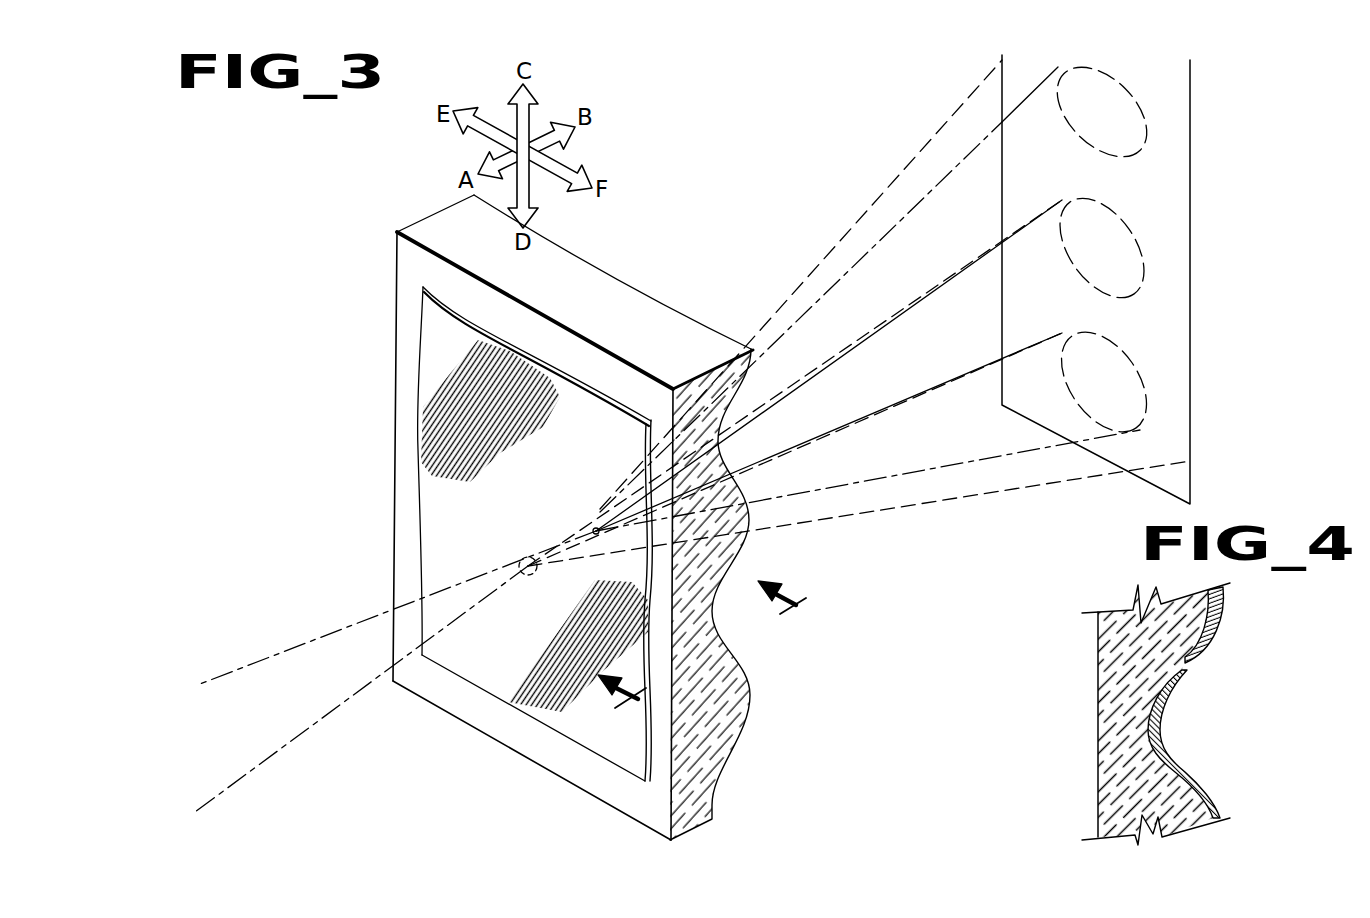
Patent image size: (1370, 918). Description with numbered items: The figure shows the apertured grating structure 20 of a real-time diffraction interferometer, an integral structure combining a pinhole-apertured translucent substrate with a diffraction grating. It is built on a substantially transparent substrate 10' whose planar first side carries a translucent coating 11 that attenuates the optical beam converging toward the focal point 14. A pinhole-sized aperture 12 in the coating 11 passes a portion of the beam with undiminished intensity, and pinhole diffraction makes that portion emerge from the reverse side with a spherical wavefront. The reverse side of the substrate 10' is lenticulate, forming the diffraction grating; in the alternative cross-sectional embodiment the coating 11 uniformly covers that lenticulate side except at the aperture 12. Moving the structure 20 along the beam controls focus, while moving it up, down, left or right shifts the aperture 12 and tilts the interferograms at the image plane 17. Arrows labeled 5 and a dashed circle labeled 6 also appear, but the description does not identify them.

In FIG. 3, the apertured grating structure 20 is at (360, 338).
In FIG. 3, the transparent substrate 10' is at (724, 597).
In FIG. 4, the transparent substrate 10' is at (1121, 714).
In FIG. 3, the translucent coating 11 is at (596, 738).
In FIG. 4, the translucent coating 11 is at (1207, 790).
In FIG. 3, the pinhole aperture 12 is at (528, 557).
In FIG. 4, the pinhole aperture 12 is at (1187, 665).
In FIG. 3, the focal point 14 is at (592, 528).
In FIG. 3, the virtual source point 6 is at (692, 436).
In FIG. 3, the image plane 17 is at (1192, 369).
In FIG. 3, the viewing direction arrows 5 is at (707, 649).